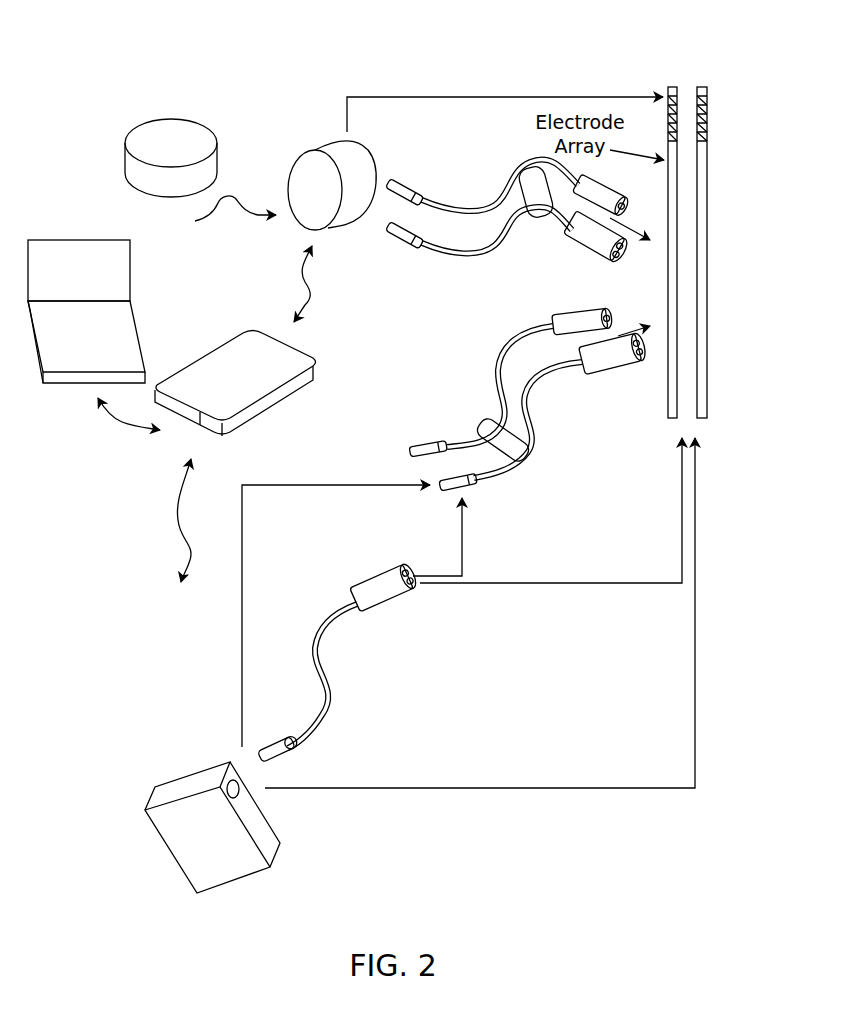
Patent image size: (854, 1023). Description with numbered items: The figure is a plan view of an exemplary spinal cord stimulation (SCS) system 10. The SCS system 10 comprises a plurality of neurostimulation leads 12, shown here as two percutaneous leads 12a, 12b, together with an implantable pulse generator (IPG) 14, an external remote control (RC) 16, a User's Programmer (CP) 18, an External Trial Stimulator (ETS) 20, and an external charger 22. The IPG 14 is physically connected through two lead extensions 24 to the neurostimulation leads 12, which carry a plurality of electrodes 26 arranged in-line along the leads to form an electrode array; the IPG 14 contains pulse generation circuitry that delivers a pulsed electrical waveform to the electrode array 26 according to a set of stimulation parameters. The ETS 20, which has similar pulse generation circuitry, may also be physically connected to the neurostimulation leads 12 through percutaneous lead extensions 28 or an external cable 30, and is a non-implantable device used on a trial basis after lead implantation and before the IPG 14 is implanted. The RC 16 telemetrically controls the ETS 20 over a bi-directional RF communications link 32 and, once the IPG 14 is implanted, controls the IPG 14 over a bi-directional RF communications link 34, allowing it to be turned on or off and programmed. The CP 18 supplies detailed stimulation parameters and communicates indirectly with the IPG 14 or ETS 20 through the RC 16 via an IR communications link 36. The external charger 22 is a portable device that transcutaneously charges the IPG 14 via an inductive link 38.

The SCS system 10 is at (484, 50).
The neurostimulation leads 12 is at (723, 228).
The percutaneous lead 12a is at (678, 180).
The percutaneous lead 12b is at (708, 226).
The implantable pulse generator (IPG) 14 is at (313, 146).
The external remote control (RC) 16 is at (246, 344).
The User's Programmer (CP) 18 is at (63, 250).
The External Trial Stimulator (ETS) 20 is at (190, 785).
The external charger 22 is at (171, 126).
The lead extensions 24 is at (528, 166).
The electrodes 26 is at (707, 146).
The percutaneous lead extensions 28 is at (484, 420).
The external cable 30 is at (334, 619).
The bi-directional RF communications link 32 is at (186, 560).
The bi-directional RF communications link 34 is at (312, 299).
The IR communications link 36 is at (118, 421).
The inductive link 38 is at (222, 214).